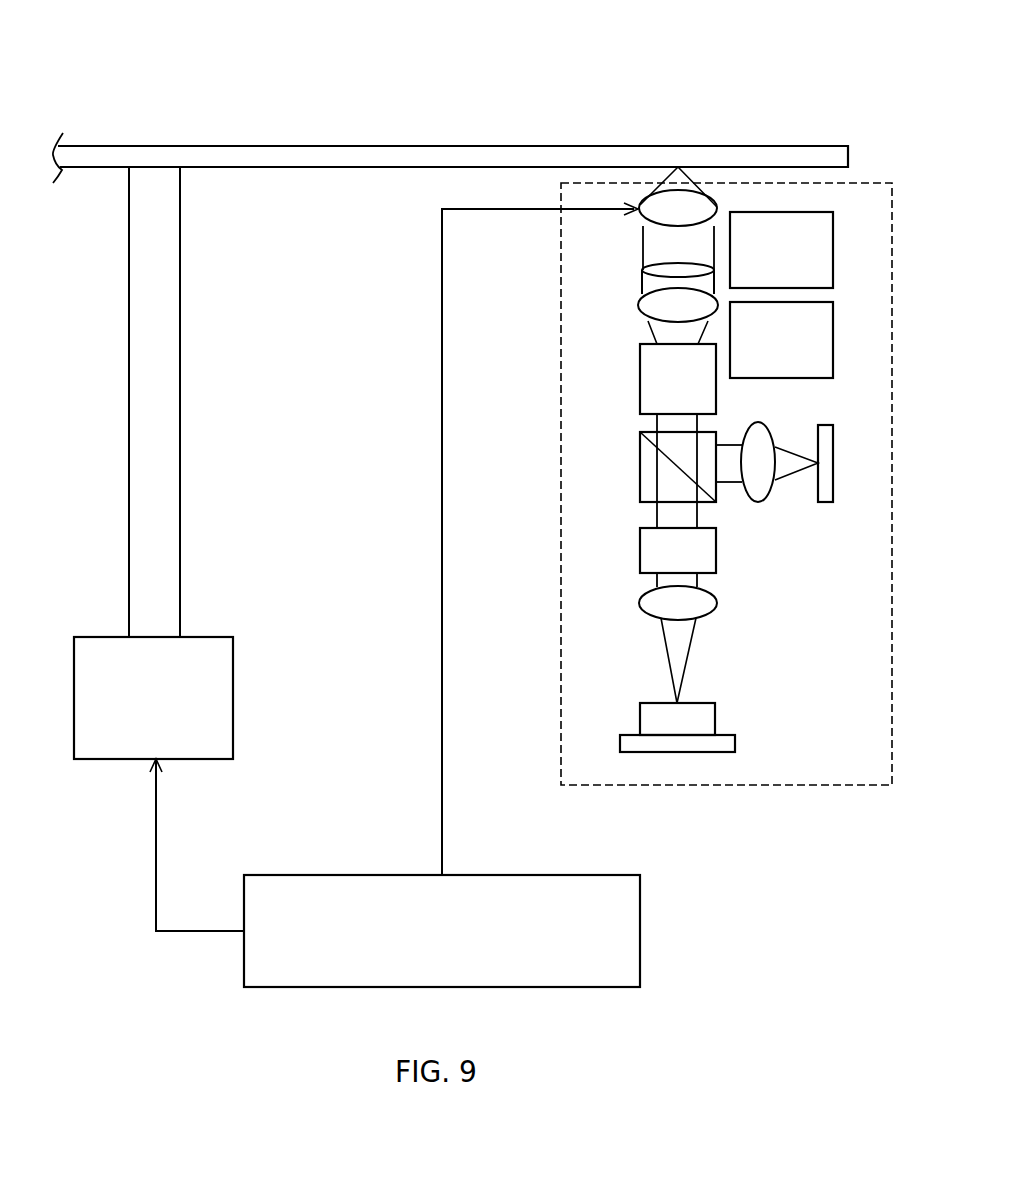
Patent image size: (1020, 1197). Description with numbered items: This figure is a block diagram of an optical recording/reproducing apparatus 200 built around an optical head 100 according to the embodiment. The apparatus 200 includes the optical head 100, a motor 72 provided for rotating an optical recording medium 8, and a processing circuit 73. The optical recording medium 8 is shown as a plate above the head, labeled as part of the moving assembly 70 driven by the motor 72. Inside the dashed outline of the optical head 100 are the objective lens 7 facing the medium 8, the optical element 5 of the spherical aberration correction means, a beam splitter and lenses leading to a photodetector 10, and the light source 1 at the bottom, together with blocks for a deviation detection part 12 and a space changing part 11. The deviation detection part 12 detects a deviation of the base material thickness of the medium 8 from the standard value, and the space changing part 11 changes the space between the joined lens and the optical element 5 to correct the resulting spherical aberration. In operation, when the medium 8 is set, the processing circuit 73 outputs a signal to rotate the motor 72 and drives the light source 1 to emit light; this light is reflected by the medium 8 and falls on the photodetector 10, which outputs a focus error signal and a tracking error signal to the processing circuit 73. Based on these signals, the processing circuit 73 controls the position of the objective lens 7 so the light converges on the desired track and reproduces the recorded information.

The optical recording/reproducing apparatus 200 is at (697, 80).
The optical recording medium 8 is at (785, 150).
The moving mechanism 70 is at (164, 101).
The motor 72 is at (222, 698).
The processing circuit 73 is at (630, 930).
The optical head 100 is at (561, 483).
The objective lens 7 is at (640, 220).
The optical element 5 is at (640, 378).
The deviation detection part 12 is at (835, 250).
The space changing part 11 is at (835, 333).
The photodetector 10 is at (825, 503).
The light source 1 is at (730, 740).